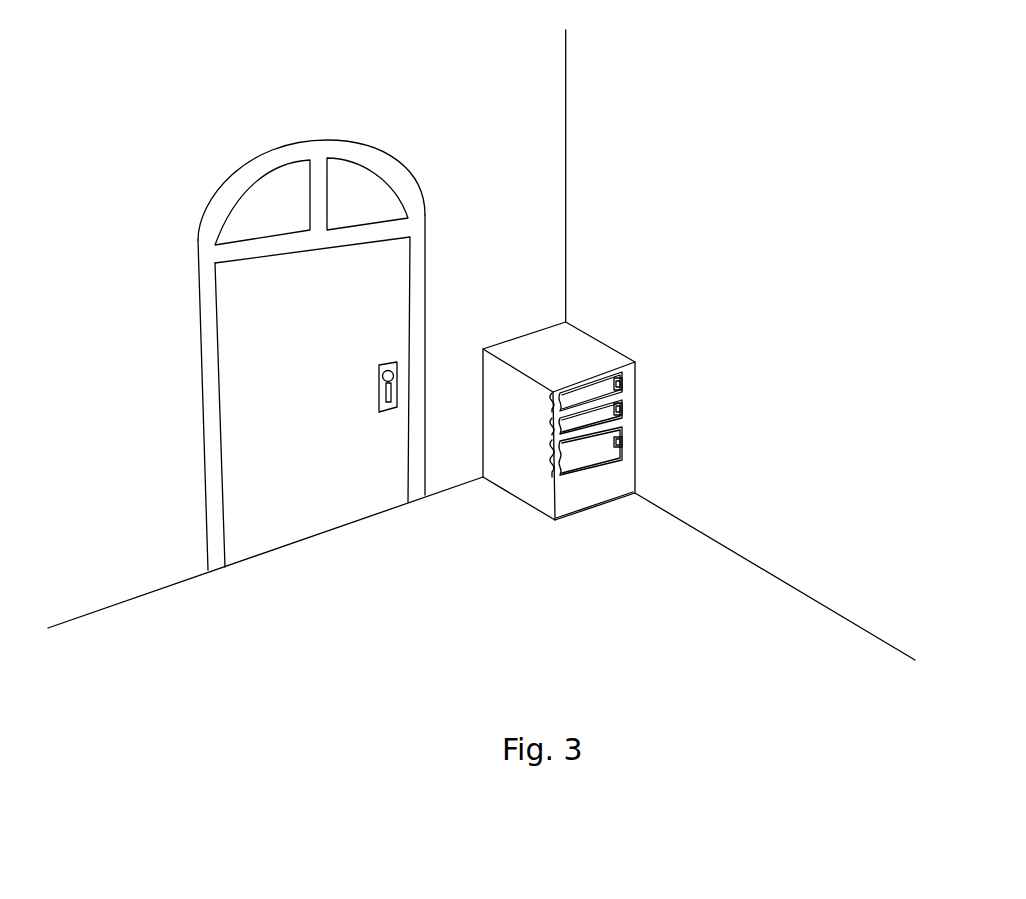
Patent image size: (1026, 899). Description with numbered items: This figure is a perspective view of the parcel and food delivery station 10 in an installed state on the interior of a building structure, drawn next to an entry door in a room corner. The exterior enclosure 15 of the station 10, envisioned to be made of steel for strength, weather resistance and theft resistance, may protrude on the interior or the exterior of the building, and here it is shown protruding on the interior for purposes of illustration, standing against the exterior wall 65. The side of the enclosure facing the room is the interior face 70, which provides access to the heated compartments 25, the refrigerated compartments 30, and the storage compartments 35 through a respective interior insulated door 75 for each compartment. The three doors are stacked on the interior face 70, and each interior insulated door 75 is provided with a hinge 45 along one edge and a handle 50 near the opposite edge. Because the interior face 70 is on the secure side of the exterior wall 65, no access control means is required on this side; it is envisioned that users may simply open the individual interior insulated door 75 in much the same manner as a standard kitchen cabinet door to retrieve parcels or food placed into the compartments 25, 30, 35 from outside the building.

The parcel and food delivery station 10 is at (82, 155).
The exterior enclosure 15 is at (572, 348).
The heated compartment 25 is at (542, 405).
The refrigerated compartment 30 is at (543, 428).
The storage compartment 35 is at (542, 462).
The hinge 45 is at (558, 397).
The handle 50 is at (622, 384).
The exterior wall 65 is at (493, 272).
The interior face 70 is at (573, 498).
The interior insulated door 75 is at (593, 388).